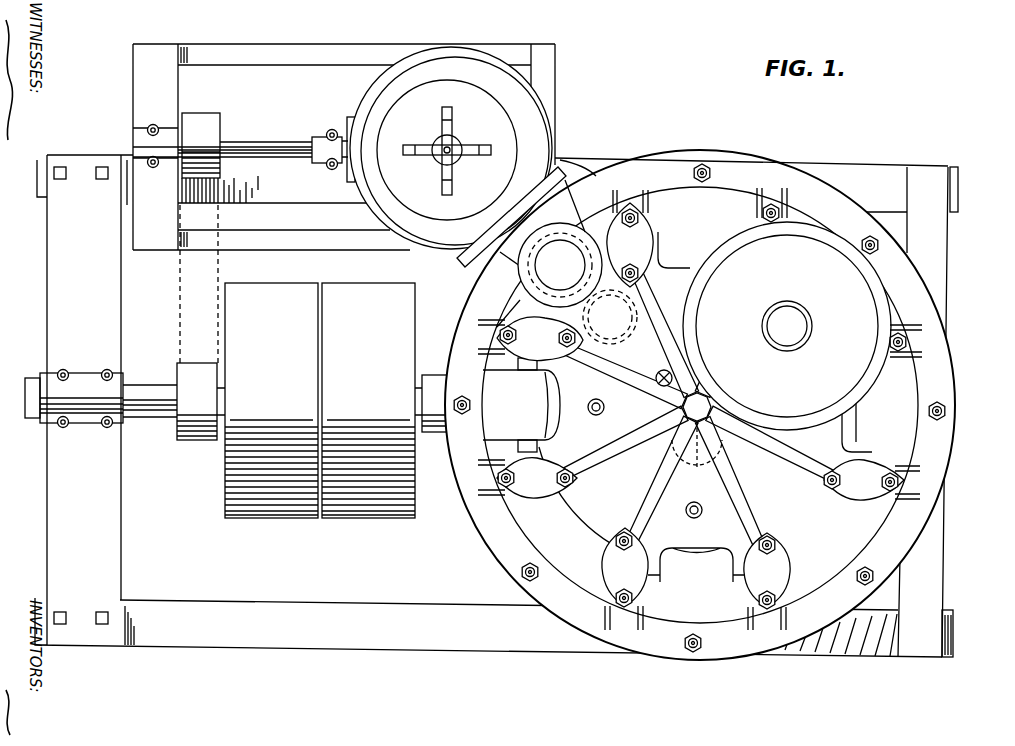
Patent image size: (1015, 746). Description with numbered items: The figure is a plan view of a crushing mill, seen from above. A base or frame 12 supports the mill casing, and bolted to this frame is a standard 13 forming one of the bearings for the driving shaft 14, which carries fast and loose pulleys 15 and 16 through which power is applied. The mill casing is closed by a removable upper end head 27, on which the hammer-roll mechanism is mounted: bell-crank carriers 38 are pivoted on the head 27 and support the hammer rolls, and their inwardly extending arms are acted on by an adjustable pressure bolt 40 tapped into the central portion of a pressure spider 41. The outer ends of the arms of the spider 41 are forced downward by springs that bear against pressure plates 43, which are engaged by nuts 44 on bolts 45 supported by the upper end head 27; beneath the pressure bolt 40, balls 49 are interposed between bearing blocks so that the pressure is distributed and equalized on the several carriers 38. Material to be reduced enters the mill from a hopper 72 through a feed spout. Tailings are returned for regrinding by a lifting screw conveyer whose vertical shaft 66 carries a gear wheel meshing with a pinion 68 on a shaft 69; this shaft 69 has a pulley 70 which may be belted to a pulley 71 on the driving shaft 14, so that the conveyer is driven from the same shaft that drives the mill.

The base or frame 12 is at (494, 627).
The standard 13 is at (90, 422).
The driving shaft 14 is at (155, 416).
The fast pulley 15 is at (292, 516).
The loose pulley 16 is at (380, 518).
The upper end head 27 is at (585, 527).
The bell-crank carrier 38 is at (677, 470).
The pressure bolt 40 is at (667, 376).
The pressure spider 41 is at (638, 484).
The pressure plate 43 is at (634, 473).
The nut 44 is at (699, 479).
The bolt 45 is at (628, 590).
The ball 49 is at (697, 460).
The vertical shaft 66 is at (452, 148).
The pinion 68 is at (549, 218).
The shaft 69 is at (290, 142).
The pulley 70 is at (212, 125).
The pulley 71 is at (205, 432).
The hopper 72 is at (860, 292).